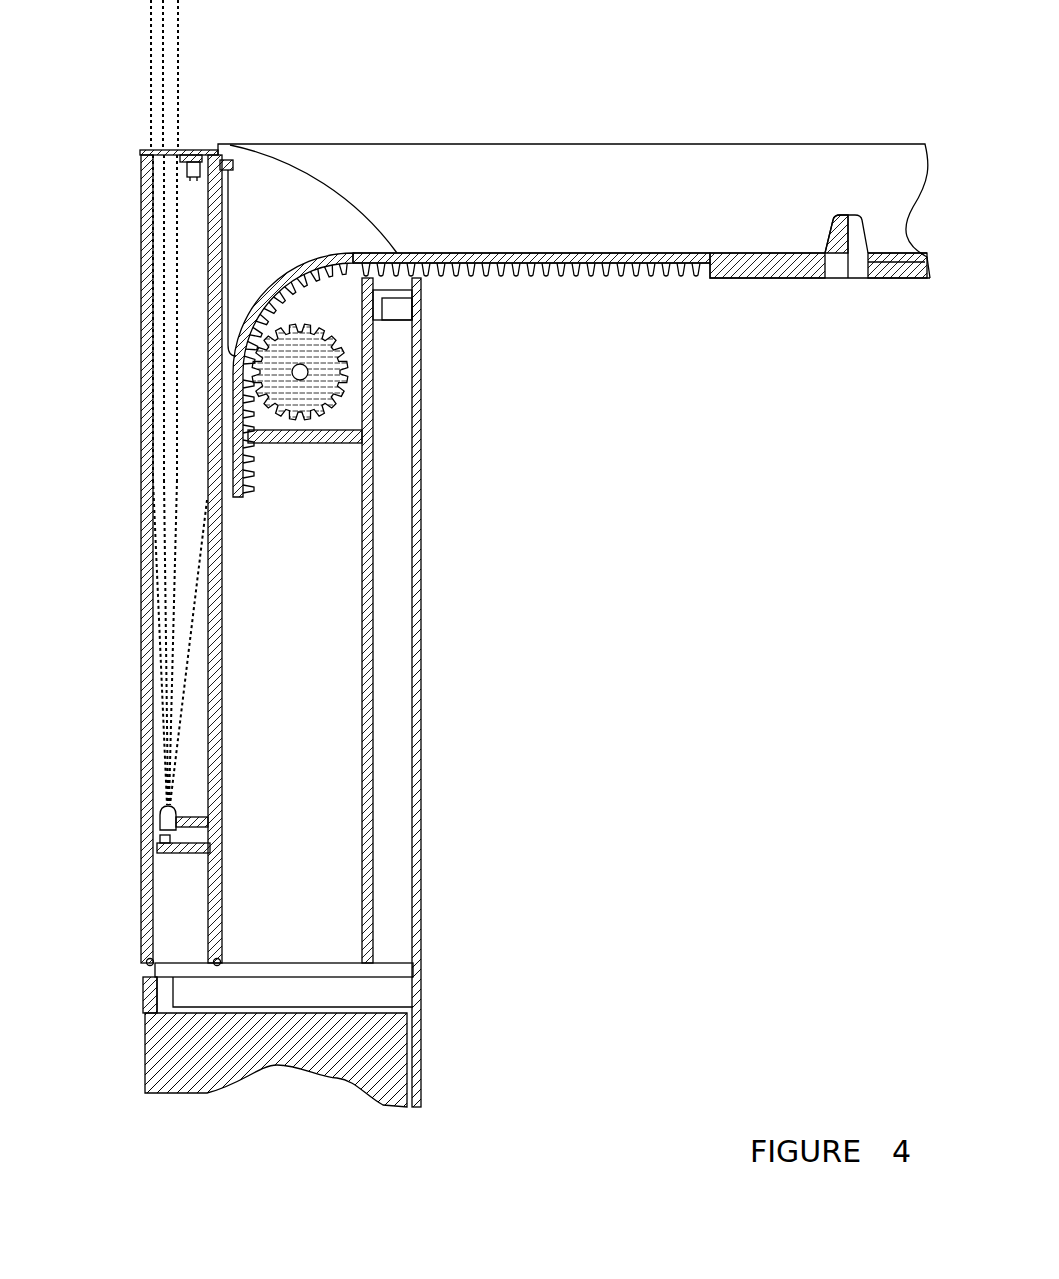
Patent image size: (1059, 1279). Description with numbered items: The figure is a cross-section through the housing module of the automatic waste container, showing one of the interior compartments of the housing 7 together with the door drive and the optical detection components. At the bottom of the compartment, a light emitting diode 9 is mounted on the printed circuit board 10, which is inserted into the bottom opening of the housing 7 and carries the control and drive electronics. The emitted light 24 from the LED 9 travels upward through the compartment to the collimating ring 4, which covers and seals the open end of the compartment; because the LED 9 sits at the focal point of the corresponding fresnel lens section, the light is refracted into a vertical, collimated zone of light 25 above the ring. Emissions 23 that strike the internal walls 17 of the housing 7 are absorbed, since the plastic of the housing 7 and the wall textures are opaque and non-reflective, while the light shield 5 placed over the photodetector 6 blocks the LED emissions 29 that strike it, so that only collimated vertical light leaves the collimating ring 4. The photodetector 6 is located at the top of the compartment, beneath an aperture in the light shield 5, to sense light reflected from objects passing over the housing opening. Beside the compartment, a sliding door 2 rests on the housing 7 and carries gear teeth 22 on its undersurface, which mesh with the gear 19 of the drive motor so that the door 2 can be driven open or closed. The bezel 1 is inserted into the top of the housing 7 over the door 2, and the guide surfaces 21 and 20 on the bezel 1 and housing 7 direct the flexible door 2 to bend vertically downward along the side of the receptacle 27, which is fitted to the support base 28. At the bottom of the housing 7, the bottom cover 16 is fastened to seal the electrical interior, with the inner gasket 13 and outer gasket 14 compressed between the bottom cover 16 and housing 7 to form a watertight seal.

The bezel 1 is at (605, 170).
The sliding door 2 is at (747, 263).
The collimating ring 4 is at (140, 150).
The light shield 5 is at (190, 152).
The photodetector 6 is at (208, 152).
The housing 7 is at (145, 282).
The light emitting diode 9 is at (158, 826).
The printed circuit board 10 is at (190, 850).
The inner gasket 13 is at (215, 965).
The outer gasket 14 is at (150, 962).
The bottom cover 16 is at (160, 983).
The internal wall 17 is at (218, 517).
The gear 19 is at (337, 393).
The guide surface 20 is at (328, 302).
The guide surface 21 is at (298, 225).
The drive engagement features 22 is at (582, 278).
The emissions 23 is at (155, 757).
The emitted light 24 is at (177, 430).
The collimated zone of light 25 is at (178, 48).
The receptacle 27 is at (420, 660).
The support base 28 is at (155, 1065).
The LED emissions 29 is at (183, 193).